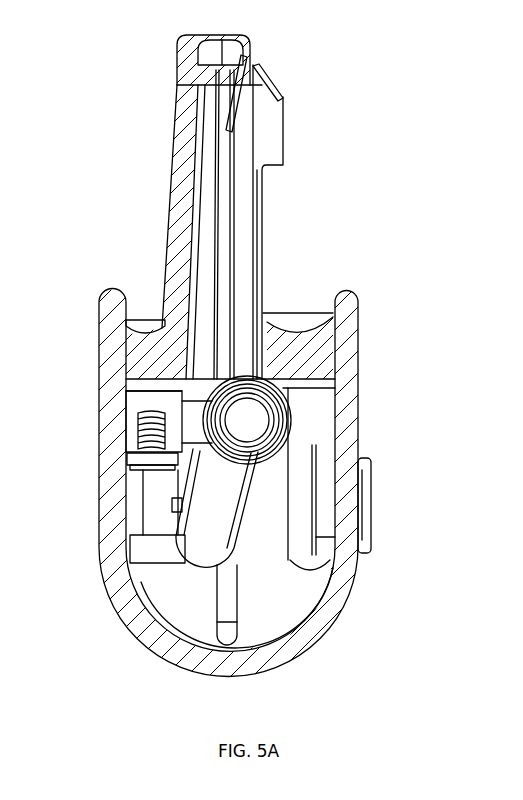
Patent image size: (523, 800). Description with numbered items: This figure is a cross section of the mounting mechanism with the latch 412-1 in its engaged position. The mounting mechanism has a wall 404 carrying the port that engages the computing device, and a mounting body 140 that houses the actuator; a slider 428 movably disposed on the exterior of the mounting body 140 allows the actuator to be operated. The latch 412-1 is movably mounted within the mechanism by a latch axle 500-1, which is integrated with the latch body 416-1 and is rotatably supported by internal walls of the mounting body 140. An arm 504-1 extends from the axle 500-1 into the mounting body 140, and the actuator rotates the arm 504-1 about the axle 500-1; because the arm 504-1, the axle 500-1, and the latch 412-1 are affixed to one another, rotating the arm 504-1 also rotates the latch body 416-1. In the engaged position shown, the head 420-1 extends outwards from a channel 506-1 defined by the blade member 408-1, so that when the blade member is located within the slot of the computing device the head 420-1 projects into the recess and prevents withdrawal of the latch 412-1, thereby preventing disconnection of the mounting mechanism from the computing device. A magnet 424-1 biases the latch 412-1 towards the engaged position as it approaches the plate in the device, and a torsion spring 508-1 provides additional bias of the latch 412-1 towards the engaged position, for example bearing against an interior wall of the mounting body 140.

The mounting body 140 is at (102, 585).
The wall 404 is at (150, 330).
The blade member 408-1 is at (165, 78).
The latch 412-1 is at (262, 287).
The latch body 416-1 is at (248, 234).
The head 420-1 is at (258, 107).
The magnet 424-1 is at (284, 138).
The slider 428 is at (371, 503).
The latch axle 500-1 is at (247, 418).
The arm 504-1 is at (208, 557).
The channel 506-1 is at (205, 202).
The torsion spring 508-1 is at (291, 426).